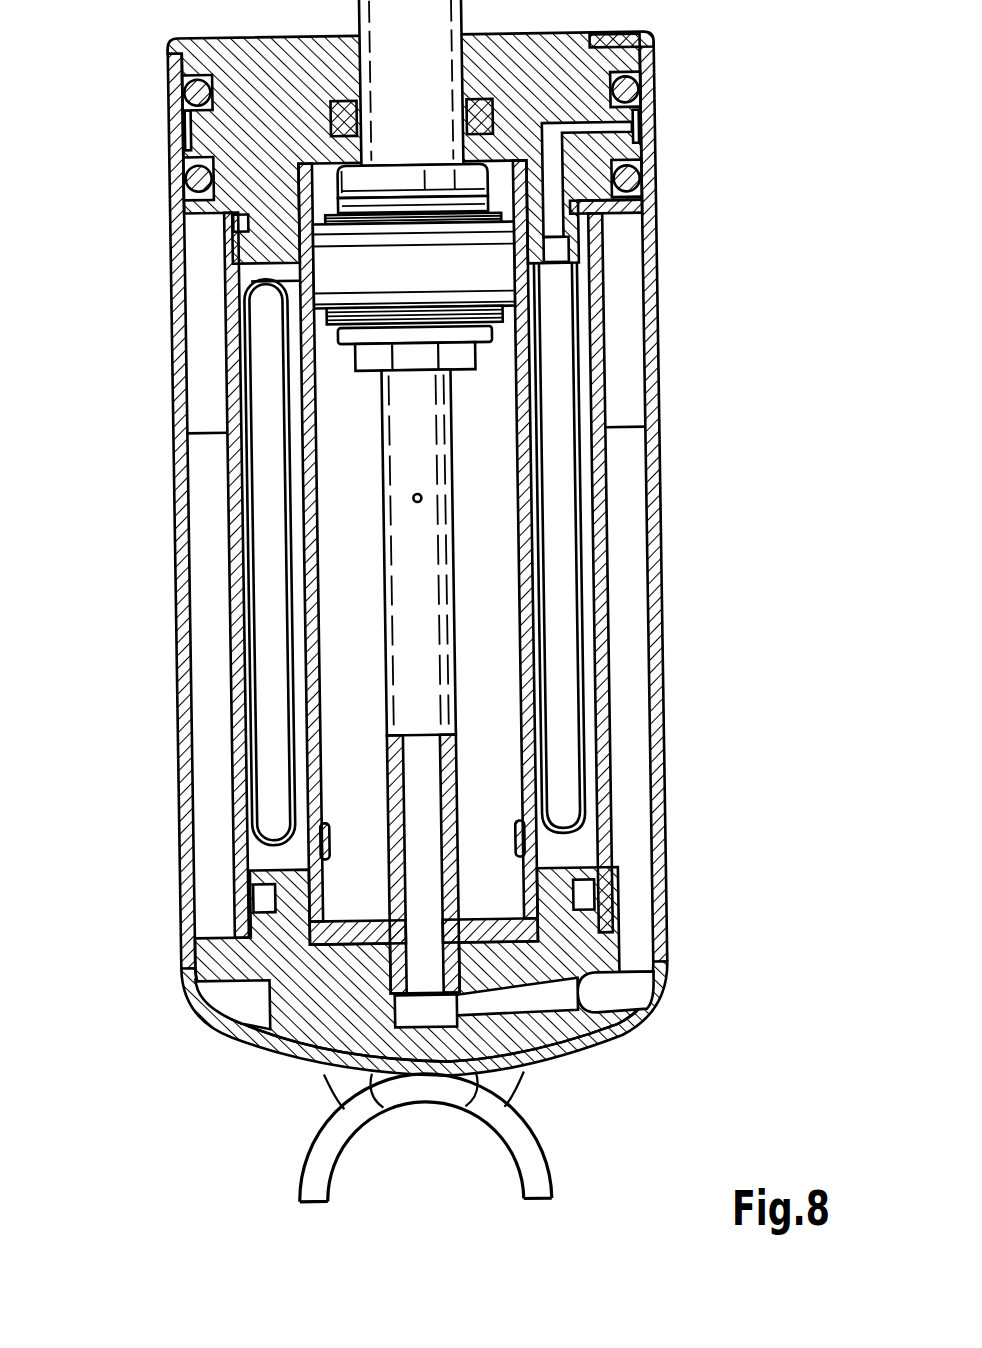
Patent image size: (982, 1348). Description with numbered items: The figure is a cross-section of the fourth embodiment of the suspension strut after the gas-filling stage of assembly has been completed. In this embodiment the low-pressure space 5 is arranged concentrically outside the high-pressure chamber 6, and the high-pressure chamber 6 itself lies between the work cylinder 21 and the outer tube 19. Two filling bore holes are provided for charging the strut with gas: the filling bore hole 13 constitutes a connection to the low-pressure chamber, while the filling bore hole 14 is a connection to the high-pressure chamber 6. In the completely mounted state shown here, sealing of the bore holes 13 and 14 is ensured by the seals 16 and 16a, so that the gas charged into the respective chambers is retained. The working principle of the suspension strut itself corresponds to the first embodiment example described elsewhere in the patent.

The seal 16 is at (655, 62).
The filling bore hole 14 is at (656, 90).
The filling bore hole 13 is at (656, 173).
The seal 16a is at (658, 196).
The low-pressure space 5 is at (203, 573).
The high-pressure chamber 6 is at (270, 517).
The work cylinder 21 is at (310, 672).
The outer tube 19 is at (177, 803).